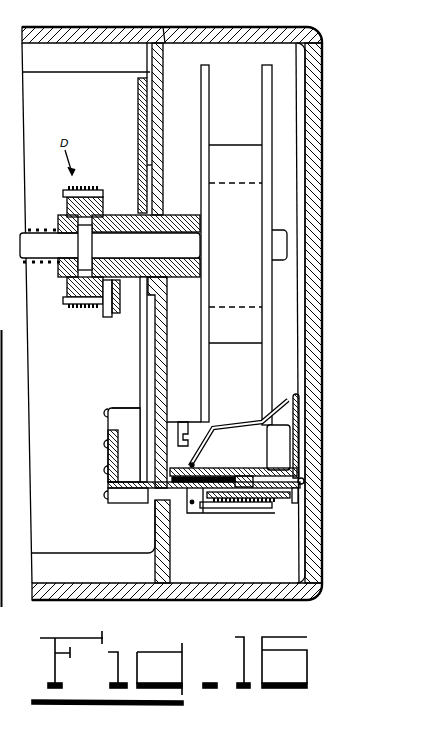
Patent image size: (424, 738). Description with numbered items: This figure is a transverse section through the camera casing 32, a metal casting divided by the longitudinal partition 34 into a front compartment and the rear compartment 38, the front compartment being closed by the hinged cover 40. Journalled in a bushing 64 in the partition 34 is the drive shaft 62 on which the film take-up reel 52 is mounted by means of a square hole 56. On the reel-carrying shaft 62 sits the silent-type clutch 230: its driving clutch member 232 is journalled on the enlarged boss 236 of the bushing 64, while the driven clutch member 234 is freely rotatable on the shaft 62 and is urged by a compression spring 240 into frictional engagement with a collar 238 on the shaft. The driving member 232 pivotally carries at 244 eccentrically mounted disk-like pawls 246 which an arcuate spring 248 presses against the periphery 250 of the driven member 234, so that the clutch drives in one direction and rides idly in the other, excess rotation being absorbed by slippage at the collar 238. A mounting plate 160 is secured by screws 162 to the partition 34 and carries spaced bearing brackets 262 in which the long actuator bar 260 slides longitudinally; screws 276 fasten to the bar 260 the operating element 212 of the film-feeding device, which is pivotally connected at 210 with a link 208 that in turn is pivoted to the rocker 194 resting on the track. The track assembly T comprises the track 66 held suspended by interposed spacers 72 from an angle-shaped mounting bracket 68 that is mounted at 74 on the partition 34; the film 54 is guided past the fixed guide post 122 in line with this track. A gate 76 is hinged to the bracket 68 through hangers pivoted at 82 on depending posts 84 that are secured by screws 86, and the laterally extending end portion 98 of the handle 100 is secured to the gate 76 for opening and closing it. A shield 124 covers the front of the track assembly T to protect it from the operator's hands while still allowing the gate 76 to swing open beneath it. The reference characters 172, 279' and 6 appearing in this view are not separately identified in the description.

The cover 40 is at (334, 143).
The casing 32 is at (160, 27).
The rear compartment 38 is at (78, 53).
The square hole 56 is at (242, 52).
The film take-up reel 52 is at (272, 125).
The bushing 64 is at (167, 224).
The longitudinal partition 34 is at (163, 353).
The screws 162 is at (138, 132).
The mounting plate 160 is at (138, 167).
The collar 238 is at (92, 245).
The driven clutch member 234 is at (58, 222).
The compression spring 240 is at (67, 290).
The pawl pivot 244 is at (97, 191).
The pawls 246 is at (67, 199).
The arcuate spring 248 is at (72, 185).
The driving clutch member 232 is at (103, 205).
The enlarged boss 236 is at (128, 215).
The periphery 250 is at (73, 247).
The clutch 230 is at (88, 174).
The drive shaft 62 is at (114, 317).
The plate 279' is at (118, 367).
The actuator bar 260 is at (118, 452).
The bearing brackets 262 is at (122, 407).
The screws 276 is at (107, 448).
The operating element 212 is at (135, 490).
The bracket mounting 74 is at (183, 438).
The fixed guide post 122 is at (278, 448).
The shield 124 is at (299, 422).
The handle 100 is at (288, 400).
The screws 86 is at (197, 466).
The mounting bracket 68 is at (228, 470).
The link 208 is at (243, 473).
The spacers 72 is at (260, 477).
The pivotal connection 210 is at (253, 483).
The film 54 is at (225, 503).
The gate 76 is at (257, 503).
The end portion of handle 98 is at (238, 508).
The depending posts 84 is at (190, 498).
The hanger pivot 82 is at (193, 504).
The track 66 is at (295, 504).
The element 172 is at (1, 200).
The rocker 194 is at (1, 452).
The track assembly T is at (0, 529).
The element 6 is at (3, 604).